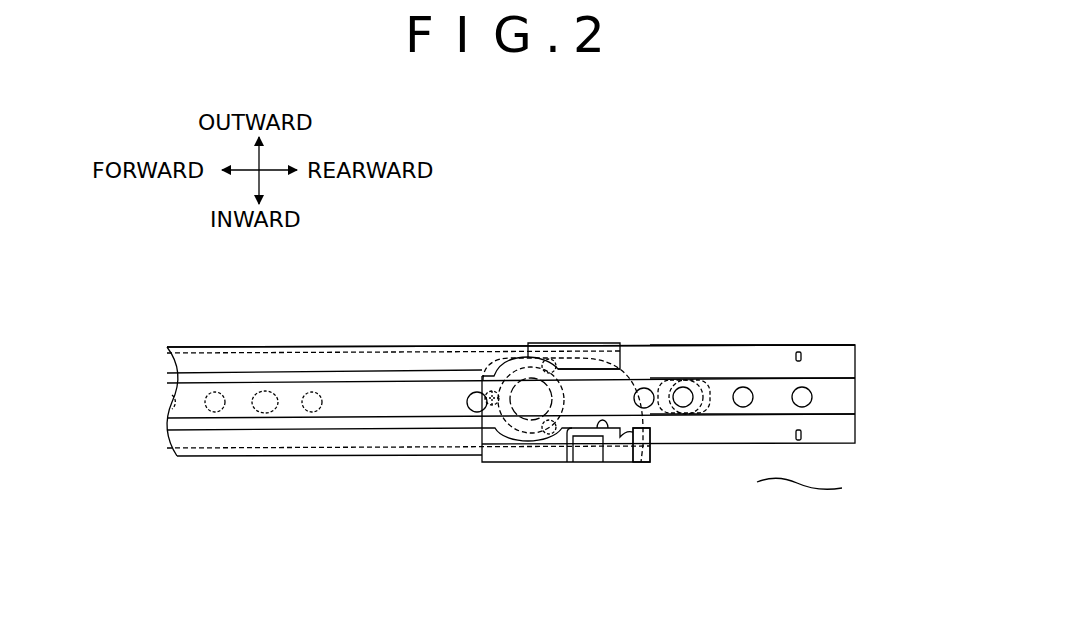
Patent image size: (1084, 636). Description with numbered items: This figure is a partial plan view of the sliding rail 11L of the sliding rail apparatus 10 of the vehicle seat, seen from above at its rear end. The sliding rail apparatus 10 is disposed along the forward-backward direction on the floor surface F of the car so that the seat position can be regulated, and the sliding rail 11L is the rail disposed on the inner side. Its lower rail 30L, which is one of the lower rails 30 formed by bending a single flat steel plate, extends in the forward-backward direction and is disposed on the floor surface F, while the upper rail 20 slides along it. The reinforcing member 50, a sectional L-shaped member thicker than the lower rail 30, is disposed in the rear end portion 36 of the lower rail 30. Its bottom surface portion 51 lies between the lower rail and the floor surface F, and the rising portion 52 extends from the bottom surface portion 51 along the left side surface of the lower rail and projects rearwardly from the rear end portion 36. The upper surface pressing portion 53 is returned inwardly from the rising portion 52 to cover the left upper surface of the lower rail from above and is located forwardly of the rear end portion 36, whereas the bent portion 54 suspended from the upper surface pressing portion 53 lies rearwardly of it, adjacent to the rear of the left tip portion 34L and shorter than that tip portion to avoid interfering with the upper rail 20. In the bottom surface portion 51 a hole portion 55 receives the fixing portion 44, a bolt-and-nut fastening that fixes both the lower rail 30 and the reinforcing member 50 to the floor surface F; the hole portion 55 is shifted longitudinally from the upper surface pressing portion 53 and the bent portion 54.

The lower rail 30L is at (511, 373).
The lower rail 30 is at (257, 346).
The sliding rail 11L is at (511, 311).
The sliding rail apparatus 10 is at (418, 343).
The upper rail 20 is at (758, 355).
The fixing portion 44 is at (502, 461).
The reinforcing member 50 is at (614, 341).
The bottom surface portion 51 is at (587, 388).
The hole portion 55 is at (527, 398).
The rear end portion 36 is at (623, 363).
The rising portion 52 is at (528, 462).
The upper surface pressing portion 53 is at (580, 447).
The left tip portion 34L is at (607, 432).
The bent portion 54 is at (645, 428).
The floor surface F is at (809, 489).